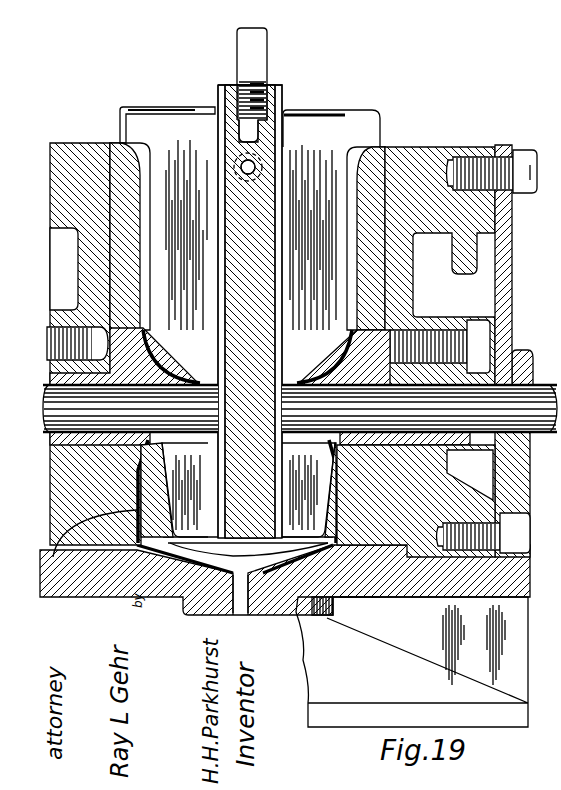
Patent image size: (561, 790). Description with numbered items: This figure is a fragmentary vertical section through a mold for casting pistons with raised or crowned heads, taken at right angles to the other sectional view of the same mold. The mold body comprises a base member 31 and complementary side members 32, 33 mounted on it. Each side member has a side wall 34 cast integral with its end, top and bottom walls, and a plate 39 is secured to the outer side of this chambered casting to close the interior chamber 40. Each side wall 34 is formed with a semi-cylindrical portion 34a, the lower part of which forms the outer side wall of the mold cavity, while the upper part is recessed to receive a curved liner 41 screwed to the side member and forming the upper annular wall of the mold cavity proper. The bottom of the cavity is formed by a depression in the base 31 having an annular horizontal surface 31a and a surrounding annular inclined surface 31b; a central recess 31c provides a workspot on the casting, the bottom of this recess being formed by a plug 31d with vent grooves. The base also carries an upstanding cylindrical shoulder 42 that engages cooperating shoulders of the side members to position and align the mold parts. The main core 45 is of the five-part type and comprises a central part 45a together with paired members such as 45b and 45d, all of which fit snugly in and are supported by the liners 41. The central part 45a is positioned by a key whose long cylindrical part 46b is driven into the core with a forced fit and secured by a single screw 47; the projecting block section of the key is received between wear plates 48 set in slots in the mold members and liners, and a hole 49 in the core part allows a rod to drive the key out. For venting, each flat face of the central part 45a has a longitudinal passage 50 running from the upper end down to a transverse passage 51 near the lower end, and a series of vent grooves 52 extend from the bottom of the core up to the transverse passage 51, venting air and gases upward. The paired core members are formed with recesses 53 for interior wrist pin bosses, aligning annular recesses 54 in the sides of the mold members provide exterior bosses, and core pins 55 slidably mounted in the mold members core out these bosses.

The base member 31 is at (410, 600).
The annular horizontal surface 31a is at (267, 612).
The annular inclined surface 31b is at (343, 598).
The central recess 31c is at (245, 571).
The plug 31d is at (240, 612).
The side member 32 is at (445, 148).
The side member 33 is at (62, 143).
The side wall 34 is at (471, 352).
The semi-cylindrical portion 34a is at (352, 498).
The plate 39 is at (505, 296).
The interior chamber 40 is at (454, 275).
The curved liner 41 is at (117, 147).
The upstanding cylindrical shoulder 42 is at (118, 594).
The main core 45 is at (202, 105).
The central core part 45a is at (270, 88).
The core member 45b is at (165, 115).
The core member 45d is at (343, 123).
The cylindrical key part 46b is at (233, 162).
The screw 47 is at (560, 178).
The wear plate 48 is at (504, 156).
The hole 49 is at (256, 165).
The longitudinal passage 50 is at (218, 319).
The transverse passage 51 is at (212, 473).
The vent groove 52 is at (328, 610).
The recess 53 is at (187, 378).
The annular recess 54 is at (148, 357).
The core pin 55 is at (540, 392).